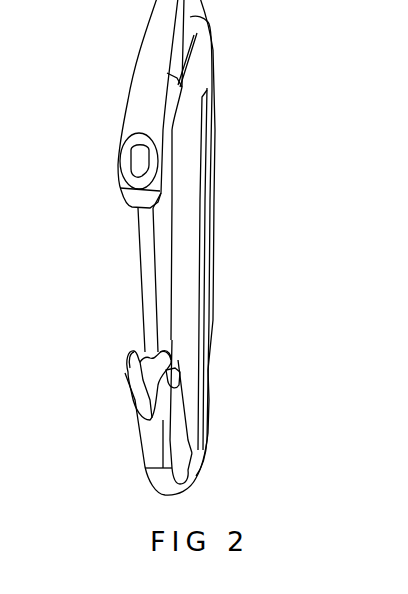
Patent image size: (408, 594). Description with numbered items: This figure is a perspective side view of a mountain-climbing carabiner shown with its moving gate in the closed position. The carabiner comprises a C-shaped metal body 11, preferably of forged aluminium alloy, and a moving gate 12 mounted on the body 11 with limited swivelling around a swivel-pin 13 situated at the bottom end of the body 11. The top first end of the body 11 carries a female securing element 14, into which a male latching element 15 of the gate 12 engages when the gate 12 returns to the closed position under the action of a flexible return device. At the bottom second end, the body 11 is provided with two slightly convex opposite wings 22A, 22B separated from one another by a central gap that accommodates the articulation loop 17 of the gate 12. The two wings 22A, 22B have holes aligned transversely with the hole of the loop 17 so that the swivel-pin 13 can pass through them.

The body 11 is at (190, 184).
The moving gate 12 is at (145, 281).
The swivel-pin 13 is at (173, 378).
The female securing element 14 is at (120, 187).
The male latching element 15 is at (143, 160).
The articulation loop 17 is at (146, 374).
The wing 22A is at (132, 356).
The wing 22B is at (173, 353).